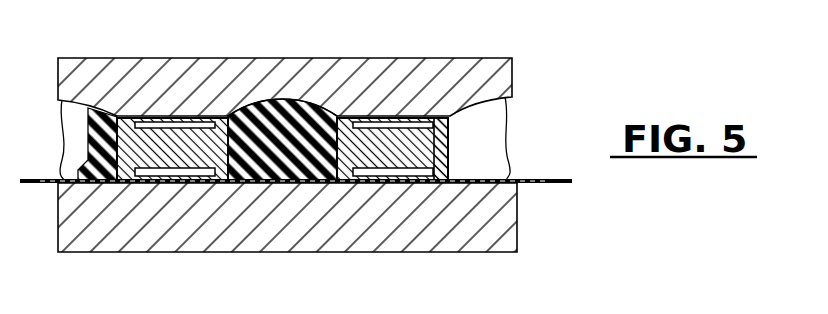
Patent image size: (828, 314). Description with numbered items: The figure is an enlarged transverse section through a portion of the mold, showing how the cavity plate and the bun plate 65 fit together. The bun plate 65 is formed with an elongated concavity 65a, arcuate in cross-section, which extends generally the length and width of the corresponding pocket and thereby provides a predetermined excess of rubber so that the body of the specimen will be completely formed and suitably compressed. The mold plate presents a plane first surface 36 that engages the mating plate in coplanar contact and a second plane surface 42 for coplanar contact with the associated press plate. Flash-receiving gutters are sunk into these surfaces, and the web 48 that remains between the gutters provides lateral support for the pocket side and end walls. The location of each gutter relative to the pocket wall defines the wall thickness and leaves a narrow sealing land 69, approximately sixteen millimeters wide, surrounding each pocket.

The plane first surface 36 is at (122, 181).
The second plane surface 42 is at (122, 122).
The web 48 is at (167, 148).
The bun plate 65 is at (505, 78).
The elongated concavity 65a is at (270, 100).
The sealing land 69 is at (443, 116).